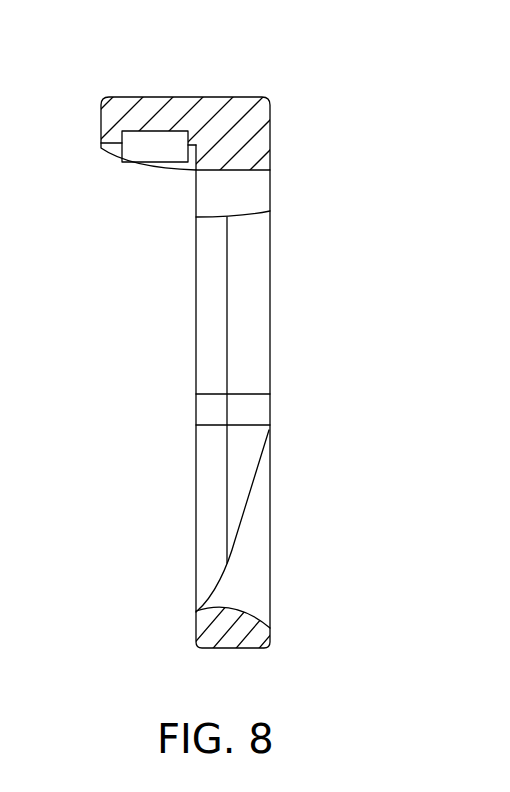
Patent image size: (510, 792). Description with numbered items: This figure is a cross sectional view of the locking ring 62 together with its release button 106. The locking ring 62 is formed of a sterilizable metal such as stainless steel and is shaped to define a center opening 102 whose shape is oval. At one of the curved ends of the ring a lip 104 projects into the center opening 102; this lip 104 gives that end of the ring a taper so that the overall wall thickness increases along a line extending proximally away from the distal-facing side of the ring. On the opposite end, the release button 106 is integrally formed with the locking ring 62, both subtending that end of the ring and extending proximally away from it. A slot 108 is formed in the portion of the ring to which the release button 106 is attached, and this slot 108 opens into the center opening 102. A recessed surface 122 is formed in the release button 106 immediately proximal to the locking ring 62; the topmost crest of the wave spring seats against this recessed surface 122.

The locking ring 62 is at (352, 130).
The center opening 102 is at (203, 345).
The lip 104 is at (243, 618).
The release button 106 is at (172, 97).
The slot 108 is at (237, 189).
The recessed surface 122 is at (143, 131).